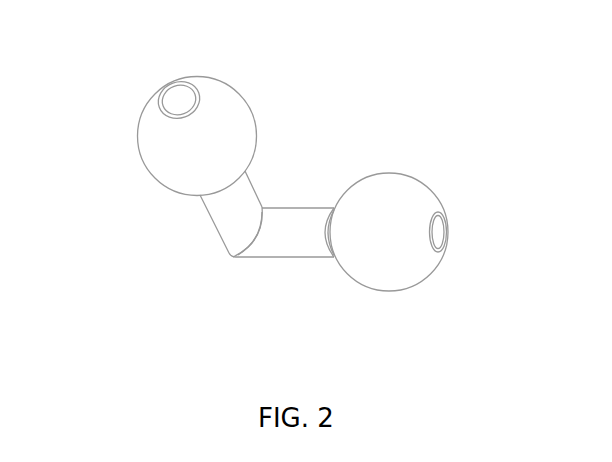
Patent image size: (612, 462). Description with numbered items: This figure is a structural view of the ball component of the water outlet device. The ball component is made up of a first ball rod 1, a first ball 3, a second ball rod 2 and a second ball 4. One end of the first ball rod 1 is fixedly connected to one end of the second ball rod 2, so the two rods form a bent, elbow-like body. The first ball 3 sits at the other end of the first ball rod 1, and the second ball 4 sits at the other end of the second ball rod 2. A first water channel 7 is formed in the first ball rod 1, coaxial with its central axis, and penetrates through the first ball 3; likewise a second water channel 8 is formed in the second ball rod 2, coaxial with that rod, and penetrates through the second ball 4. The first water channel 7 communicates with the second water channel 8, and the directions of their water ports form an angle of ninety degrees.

The first ball rod 1 is at (222, 210).
The second ball rod 2 is at (307, 230).
The first ball 3 is at (222, 122).
The second ball 4 is at (363, 208).
The first water channel 7 is at (177, 95).
The second water channel 8 is at (435, 232).